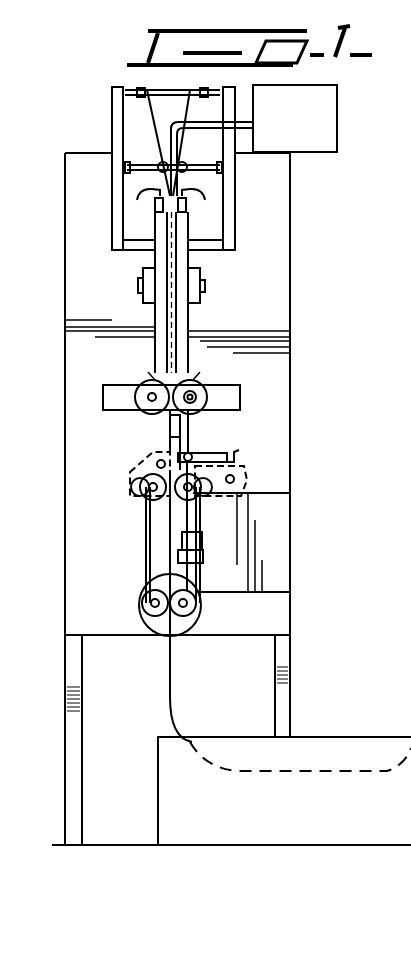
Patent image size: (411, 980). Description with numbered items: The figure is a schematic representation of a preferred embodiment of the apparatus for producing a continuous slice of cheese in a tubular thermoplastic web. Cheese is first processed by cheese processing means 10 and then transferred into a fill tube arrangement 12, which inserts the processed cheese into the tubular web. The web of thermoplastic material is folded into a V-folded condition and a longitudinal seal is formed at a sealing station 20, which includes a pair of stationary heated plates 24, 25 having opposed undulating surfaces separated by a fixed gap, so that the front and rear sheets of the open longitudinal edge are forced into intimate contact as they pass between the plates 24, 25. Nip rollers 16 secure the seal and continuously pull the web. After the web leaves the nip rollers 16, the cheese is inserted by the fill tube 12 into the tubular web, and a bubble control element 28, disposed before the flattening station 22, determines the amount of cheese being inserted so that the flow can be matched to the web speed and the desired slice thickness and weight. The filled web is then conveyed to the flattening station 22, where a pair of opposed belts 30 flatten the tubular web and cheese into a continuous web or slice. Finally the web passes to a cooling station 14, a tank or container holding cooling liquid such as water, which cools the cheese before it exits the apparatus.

The cheese processing means 10 is at (330, 100).
The fill tube arrangement 12 is at (173, 99).
The cooling station 14 is at (285, 756).
The nip rollers 16 is at (212, 376).
The sealing station 20 is at (192, 315).
The flattening station 22 is at (207, 562).
The stationary heated plate 24 is at (200, 270).
The stationary heated plate 25 is at (143, 270).
The bubble control element 28 is at (215, 452).
The belts 30 is at (143, 573).